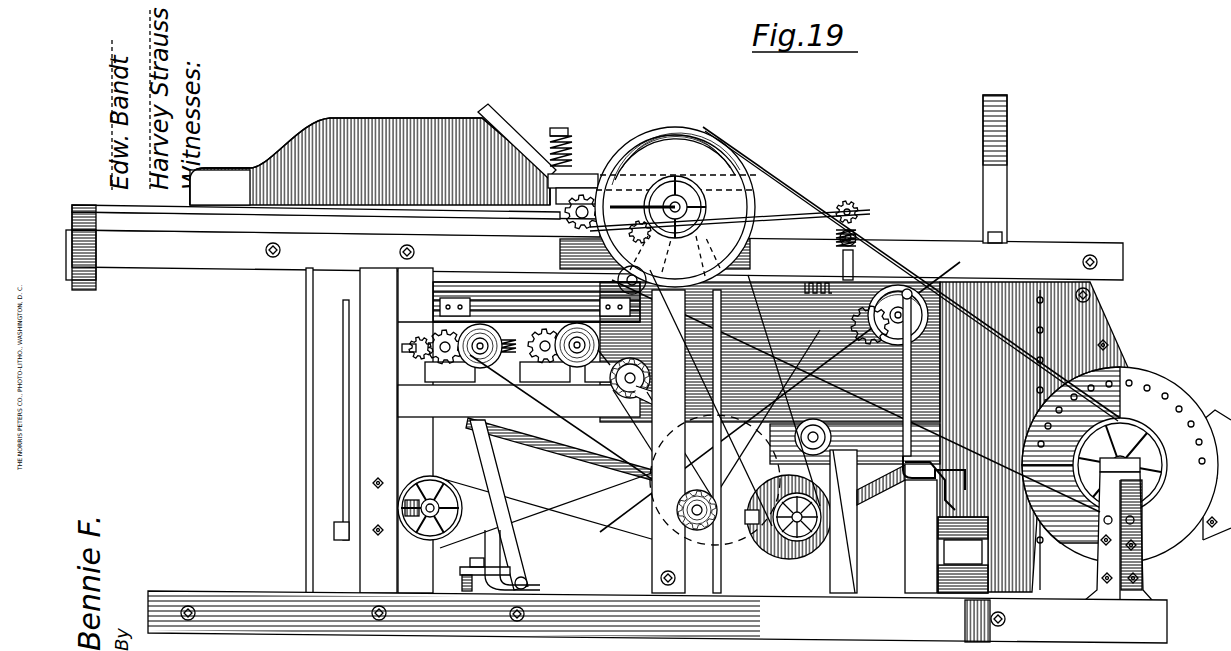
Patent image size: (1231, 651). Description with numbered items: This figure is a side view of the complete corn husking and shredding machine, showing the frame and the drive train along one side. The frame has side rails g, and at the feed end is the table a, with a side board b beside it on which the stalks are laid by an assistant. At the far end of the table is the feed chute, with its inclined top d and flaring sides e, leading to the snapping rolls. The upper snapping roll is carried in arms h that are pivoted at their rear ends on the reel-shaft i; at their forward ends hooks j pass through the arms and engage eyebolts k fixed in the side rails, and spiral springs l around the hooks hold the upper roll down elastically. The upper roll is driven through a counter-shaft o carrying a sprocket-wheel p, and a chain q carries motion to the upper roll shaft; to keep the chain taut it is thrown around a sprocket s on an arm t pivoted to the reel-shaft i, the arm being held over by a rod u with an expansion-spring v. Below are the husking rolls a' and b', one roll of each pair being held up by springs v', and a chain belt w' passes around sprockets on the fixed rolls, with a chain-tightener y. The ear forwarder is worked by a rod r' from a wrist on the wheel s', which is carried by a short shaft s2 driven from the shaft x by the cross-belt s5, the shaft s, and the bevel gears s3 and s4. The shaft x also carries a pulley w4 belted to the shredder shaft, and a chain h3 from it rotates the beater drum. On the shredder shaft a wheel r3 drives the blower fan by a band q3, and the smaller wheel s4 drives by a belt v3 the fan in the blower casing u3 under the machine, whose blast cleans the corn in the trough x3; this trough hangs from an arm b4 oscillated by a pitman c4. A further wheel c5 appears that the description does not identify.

The side board b is at (333, 247).
The side rails g is at (597, 255).
The flaring sides e is at (305, 152).
The inclined top d is at (490, 135).
The spiral springs l is at (575, 152).
The hooks j is at (563, 198).
The eyebolts k is at (568, 214).
The smaller wheel s4 is at (662, 192).
The wheel r3 is at (700, 133).
The chain q is at (758, 195).
The arms h is at (800, 178).
The reel-shaft i is at (852, 205).
The arm t is at (858, 225).
The sprocket s is at (655, 395).
The rod u is at (908, 252).
The expansion-spring v is at (808, 254).
The sprocket-wheel p is at (650, 238).
The counter-shaft o is at (642, 284).
The springs v' is at (425, 377).
The husking-rolls b' is at (449, 371).
The husking-rolls a' is at (563, 370).
The table a is at (612, 342).
The chain-tightener y is at (648, 380).
The rod r' is at (345, 430).
The short shaft s2 is at (372, 480).
The bevel-gear s3 is at (430, 478).
The wheel s' is at (345, 430).
The chain belt w' is at (589, 444).
The cross-belt s5 is at (580, 512).
The belt v3 is at (728, 425).
The shaft x is at (688, 502).
The chain h3 is at (850, 375).
The pulley c5 is at (893, 340).
The pitman c4 is at (850, 470).
The arm b4 is at (947, 490).
The pulley w4 is at (735, 433).
The blower-casing u3 is at (788, 536).
The band q3 is at (1043, 493).
The trough x3 is at (972, 568).